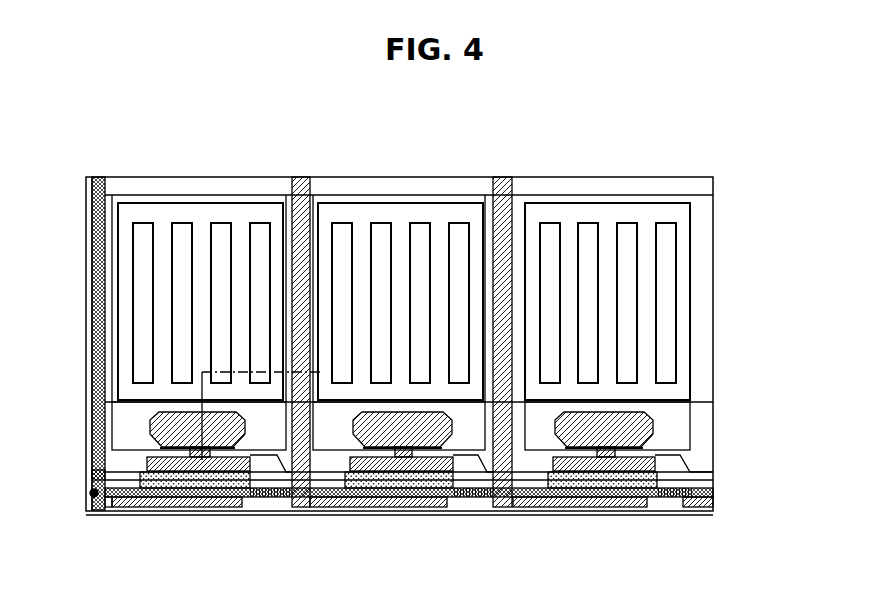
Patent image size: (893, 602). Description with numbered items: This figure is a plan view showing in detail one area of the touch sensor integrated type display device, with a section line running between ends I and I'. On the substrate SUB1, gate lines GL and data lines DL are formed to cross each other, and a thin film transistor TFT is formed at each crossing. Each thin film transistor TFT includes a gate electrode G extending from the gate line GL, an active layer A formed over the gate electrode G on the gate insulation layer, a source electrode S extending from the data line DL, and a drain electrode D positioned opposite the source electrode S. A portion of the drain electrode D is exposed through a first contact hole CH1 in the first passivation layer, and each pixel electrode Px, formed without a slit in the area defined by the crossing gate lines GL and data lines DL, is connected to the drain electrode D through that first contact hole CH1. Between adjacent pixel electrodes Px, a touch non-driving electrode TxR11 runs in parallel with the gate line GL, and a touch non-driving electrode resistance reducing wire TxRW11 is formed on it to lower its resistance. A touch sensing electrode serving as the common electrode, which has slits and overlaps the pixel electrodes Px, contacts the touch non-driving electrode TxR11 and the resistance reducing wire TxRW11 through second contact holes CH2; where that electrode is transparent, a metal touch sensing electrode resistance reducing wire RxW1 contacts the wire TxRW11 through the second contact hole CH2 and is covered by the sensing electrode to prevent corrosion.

The substrate SUB1 is at (708, 516).
The data line DL is at (101, 176).
The pixel electrode Px is at (690, 412).
The thin film transistor TFT is at (148, 411).
The gate electrode G is at (682, 465).
The drain electrode D is at (247, 425).
The gate line GL is at (712, 470).
The active layer A is at (138, 474).
The first contact hole CH1 is at (161, 449).
The second contact hole CH2 is at (110, 475).
The source electrode S is at (108, 503).
The touch non-driving electrode TxR11 is at (700, 477).
The touch non-driving electrode resistance reducing wire TxRW11 is at (712, 498).
The touch sensing electrode resistance reducing wire RxW1 is at (98, 512).
The section line I is at (130, 437).
The section line I' is at (268, 373).